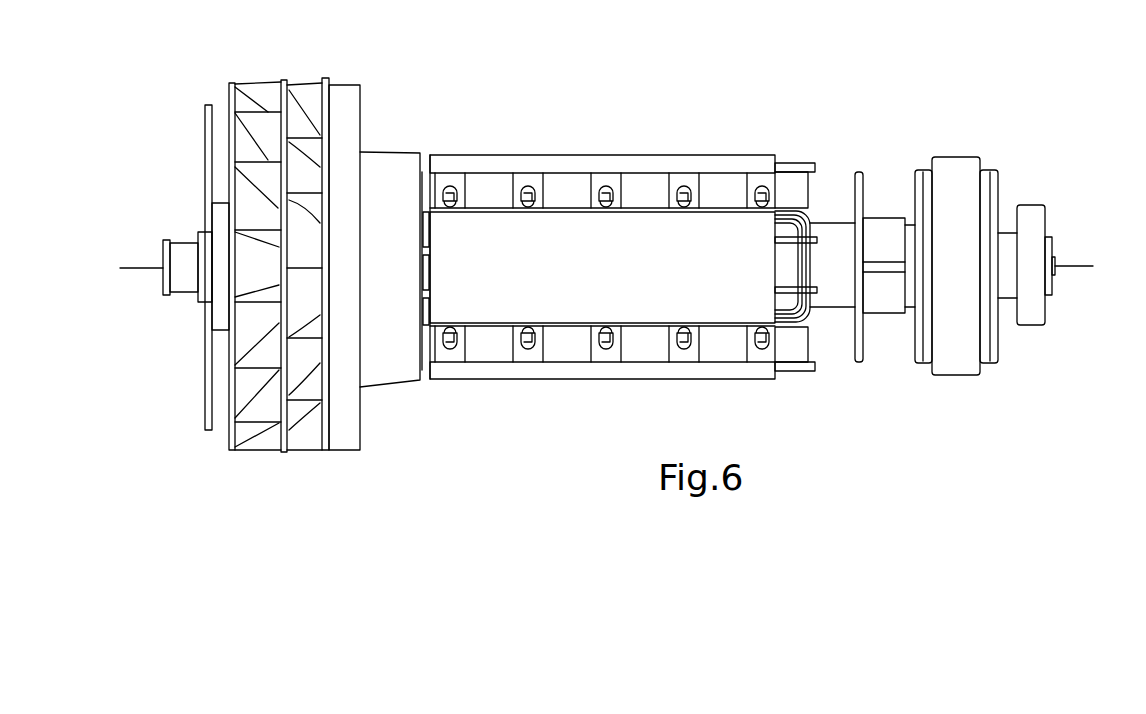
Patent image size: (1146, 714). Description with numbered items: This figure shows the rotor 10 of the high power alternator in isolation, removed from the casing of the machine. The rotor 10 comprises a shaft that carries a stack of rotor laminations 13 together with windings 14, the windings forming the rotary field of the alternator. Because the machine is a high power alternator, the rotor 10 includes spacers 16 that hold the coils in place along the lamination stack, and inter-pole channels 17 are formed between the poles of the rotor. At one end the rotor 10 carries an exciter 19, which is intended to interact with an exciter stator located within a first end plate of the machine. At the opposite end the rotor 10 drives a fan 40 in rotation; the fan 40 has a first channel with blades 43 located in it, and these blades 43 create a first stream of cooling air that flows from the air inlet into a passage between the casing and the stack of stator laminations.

The rotor 10 is at (880, 187).
The rotor laminations 13 is at (760, 166).
The windings 14 is at (813, 212).
The spacers 16 is at (522, 188).
The inter-pole channels 17 is at (483, 195).
The exciter 19 is at (1000, 192).
The fan 40 is at (230, 440).
The blades 43 is at (259, 287).